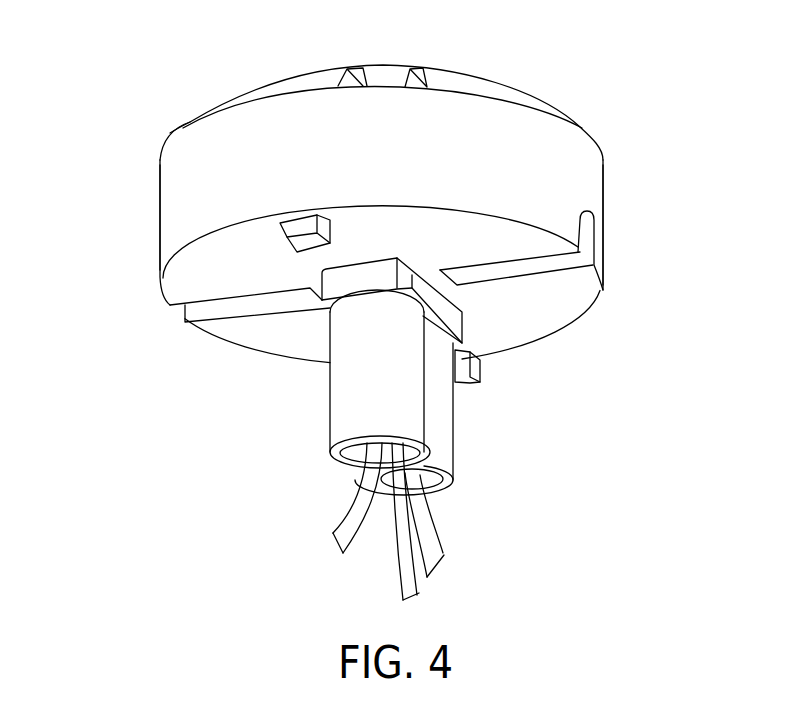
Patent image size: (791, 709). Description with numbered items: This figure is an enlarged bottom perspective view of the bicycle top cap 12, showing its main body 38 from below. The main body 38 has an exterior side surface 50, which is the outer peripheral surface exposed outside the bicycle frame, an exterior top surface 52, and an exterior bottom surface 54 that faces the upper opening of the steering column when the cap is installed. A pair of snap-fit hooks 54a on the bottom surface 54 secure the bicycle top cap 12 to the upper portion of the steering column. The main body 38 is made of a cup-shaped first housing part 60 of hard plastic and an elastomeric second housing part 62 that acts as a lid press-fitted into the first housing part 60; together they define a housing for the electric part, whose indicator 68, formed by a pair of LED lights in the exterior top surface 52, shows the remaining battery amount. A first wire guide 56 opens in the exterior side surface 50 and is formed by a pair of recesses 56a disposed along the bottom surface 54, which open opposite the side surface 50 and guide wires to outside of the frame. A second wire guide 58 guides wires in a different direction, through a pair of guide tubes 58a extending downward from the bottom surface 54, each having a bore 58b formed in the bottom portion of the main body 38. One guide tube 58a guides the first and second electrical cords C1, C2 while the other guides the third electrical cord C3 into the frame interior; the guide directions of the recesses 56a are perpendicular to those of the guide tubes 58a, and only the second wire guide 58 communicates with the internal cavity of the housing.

The bicycle top cap 12 is at (258, 81).
The main body 38 is at (102, 78).
The exterior side surface 50 is at (590, 185).
The exterior top surface 52 is at (482, 77).
The exterior bottom surface 54 is at (568, 297).
The snap-fit hooks 54a is at (333, 232).
The first wire guide 56 is at (177, 317).
The recesses 56a is at (507, 275).
The second wire guide 58 is at (472, 462).
The guide tubes 58a is at (330, 413).
The bore 58b is at (332, 470).
The first housing part 60 is at (157, 193).
The second housing part 62 is at (197, 113).
The indicator 68 is at (417, 70).
The first electrical cord C1 is at (443, 527).
The second electrical cord C2 is at (397, 550).
The third electrical cord C3 is at (353, 517).